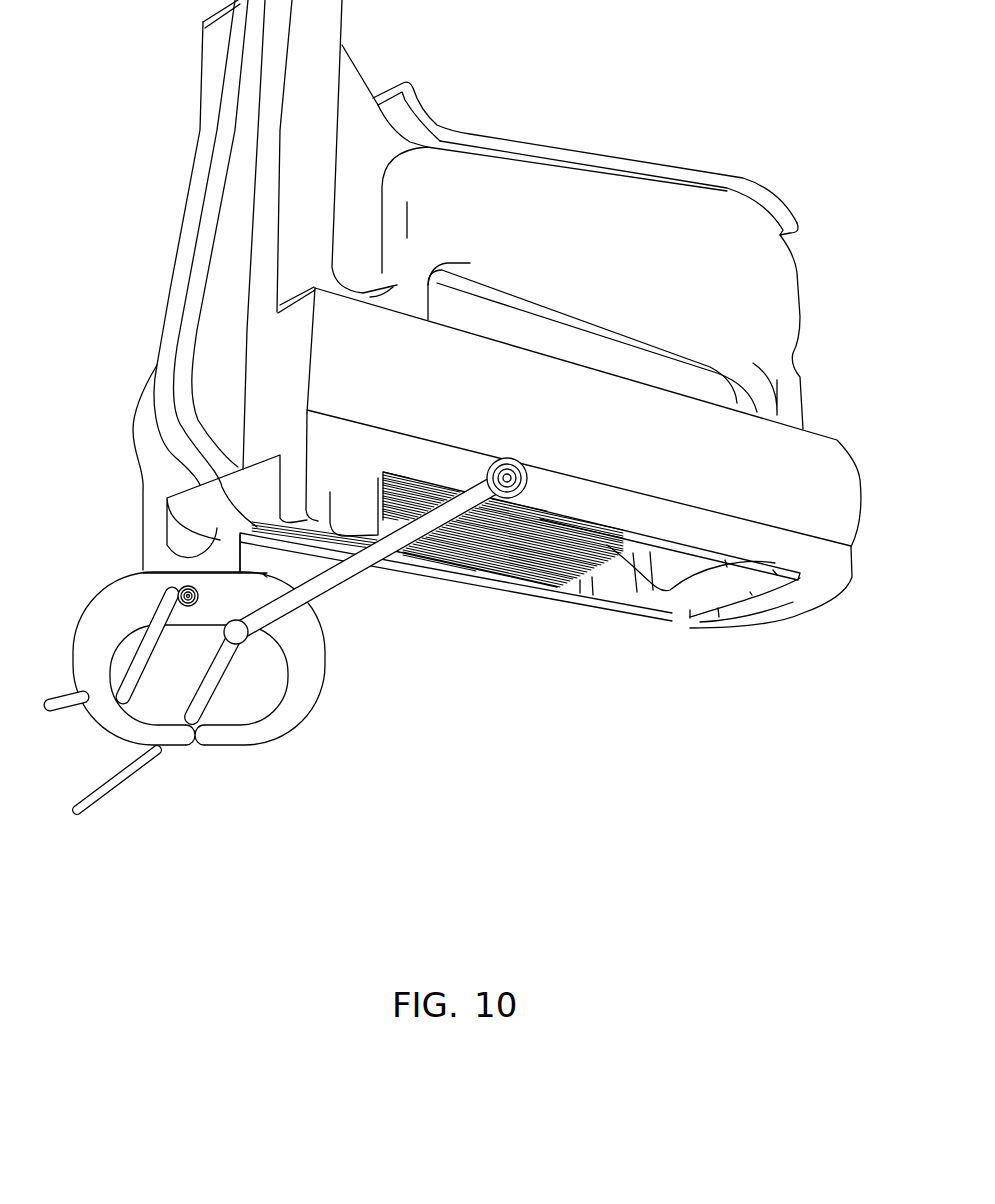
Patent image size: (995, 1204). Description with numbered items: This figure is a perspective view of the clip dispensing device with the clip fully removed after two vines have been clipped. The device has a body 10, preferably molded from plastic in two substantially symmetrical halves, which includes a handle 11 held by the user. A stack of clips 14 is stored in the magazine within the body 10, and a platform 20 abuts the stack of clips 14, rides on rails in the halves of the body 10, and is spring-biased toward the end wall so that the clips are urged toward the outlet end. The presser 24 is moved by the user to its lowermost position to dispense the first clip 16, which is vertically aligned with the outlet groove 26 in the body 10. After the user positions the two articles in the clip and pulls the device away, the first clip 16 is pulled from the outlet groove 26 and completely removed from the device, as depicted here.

The body 10 is at (815, 490).
The handle 11 is at (630, 217).
The stack of clips 14 is at (453, 547).
The first clip 16 is at (80, 627).
The platform 20 is at (667, 597).
The presser 24 is at (510, 138).
The outlet groove 26 is at (165, 540).